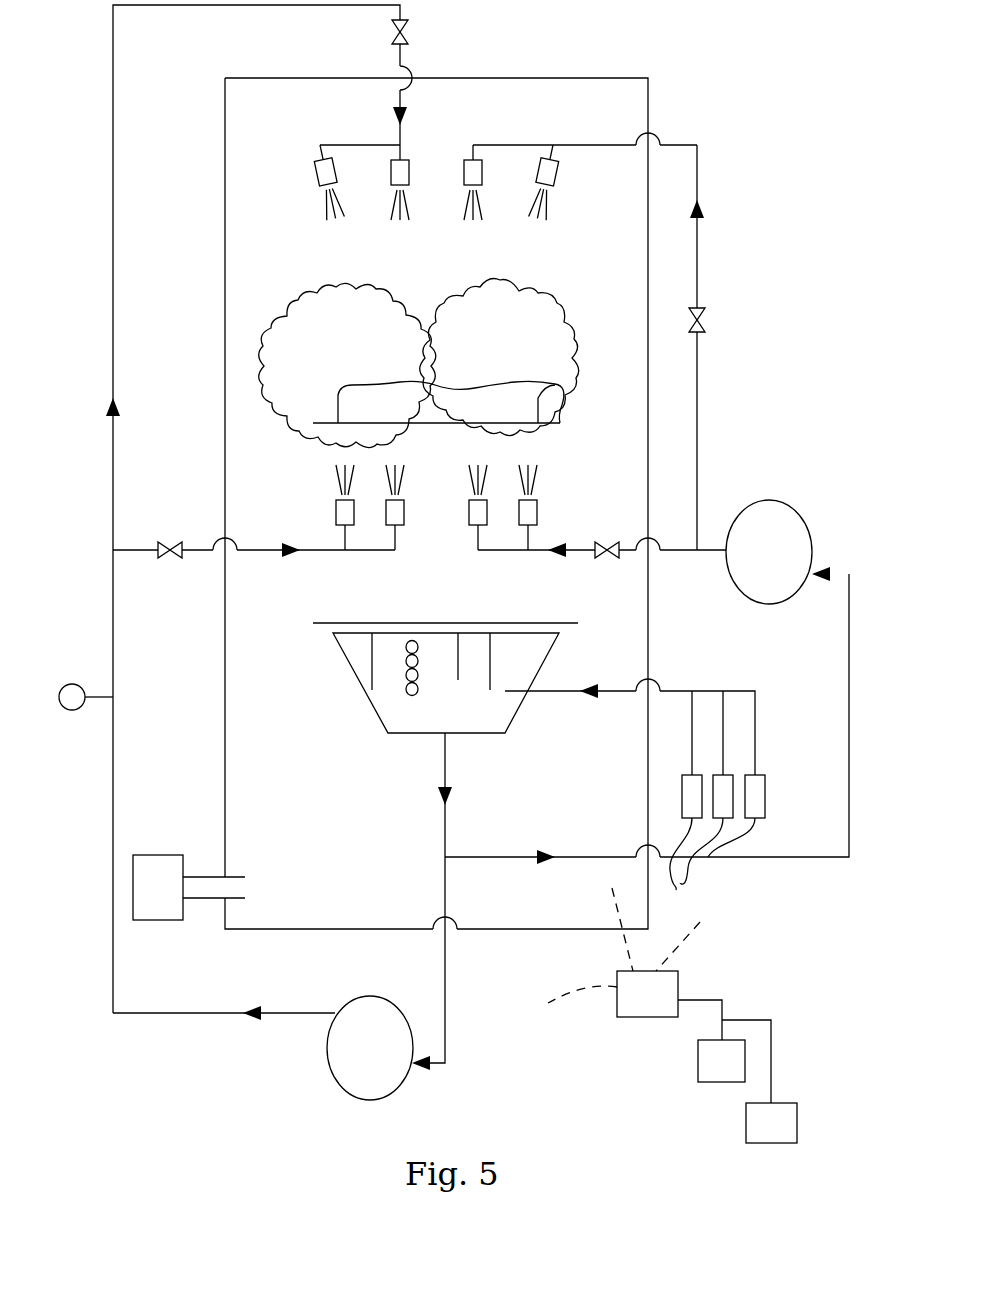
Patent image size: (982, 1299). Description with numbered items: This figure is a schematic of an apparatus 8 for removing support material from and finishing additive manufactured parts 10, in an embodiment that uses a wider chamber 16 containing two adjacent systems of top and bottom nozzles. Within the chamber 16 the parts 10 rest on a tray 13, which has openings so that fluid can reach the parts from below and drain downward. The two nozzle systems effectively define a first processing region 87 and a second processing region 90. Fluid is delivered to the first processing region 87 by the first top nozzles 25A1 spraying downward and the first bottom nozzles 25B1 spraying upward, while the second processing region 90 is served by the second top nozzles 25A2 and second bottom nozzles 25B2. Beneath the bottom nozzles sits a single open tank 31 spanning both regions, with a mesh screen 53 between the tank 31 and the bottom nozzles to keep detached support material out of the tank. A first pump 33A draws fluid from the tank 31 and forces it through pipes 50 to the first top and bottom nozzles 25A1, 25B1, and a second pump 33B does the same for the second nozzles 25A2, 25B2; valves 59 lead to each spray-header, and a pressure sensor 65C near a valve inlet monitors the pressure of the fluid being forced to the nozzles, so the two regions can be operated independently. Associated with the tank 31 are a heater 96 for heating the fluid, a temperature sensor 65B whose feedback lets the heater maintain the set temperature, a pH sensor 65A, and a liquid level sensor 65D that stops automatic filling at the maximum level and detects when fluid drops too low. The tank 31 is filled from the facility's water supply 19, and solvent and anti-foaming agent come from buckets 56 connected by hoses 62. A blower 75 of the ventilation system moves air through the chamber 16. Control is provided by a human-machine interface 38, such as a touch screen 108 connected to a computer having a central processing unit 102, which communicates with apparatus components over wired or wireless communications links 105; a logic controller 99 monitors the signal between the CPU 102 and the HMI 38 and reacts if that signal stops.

The apparatus 8 is at (688, 115).
The chamber 16 is at (572, 125).
The first top nozzles 25A1 is at (296, 190).
The second top nozzles 25A2 is at (572, 191).
The first bottom nozzles 25B1 is at (310, 512).
The second bottom nozzles 25B2 is at (562, 510).
The valves 59 is at (405, 33).
The second processing region 90 is at (487, 292).
The first processing region 87 is at (305, 305).
The additive manufactured part 10 is at (373, 388).
The tray 13 is at (560, 390).
The first pump 33A is at (389, 1061).
The second pump 33B is at (790, 565).
The tank 31 is at (355, 690).
The mesh screen 53 is at (313, 625).
The pH sensor 65A is at (492, 655).
The temperature sensor 65B is at (460, 670).
The pressure sensor 65C is at (65, 710).
The liquid level sensor 65D is at (372, 652).
The heater 96 is at (408, 690).
The hose 62 is at (725, 730).
The water supply 19 is at (766, 818).
The bucket 56 is at (647, 740).
The blower 75 is at (171, 900).
The human-machine interface 38 is at (772, 1002).
The central processing unit 102 is at (647, 994).
The touch screen 108 is at (721, 1061).
The logic controller 99 is at (746, 1132).
The communications links 105 is at (610, 888).
The pipes 50 is at (163, 1013).